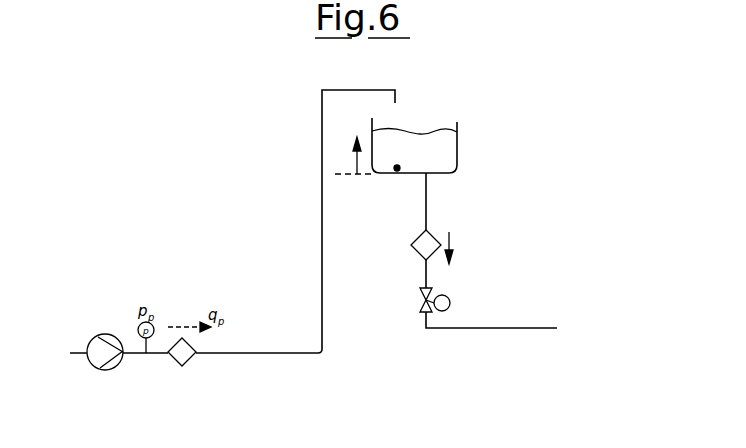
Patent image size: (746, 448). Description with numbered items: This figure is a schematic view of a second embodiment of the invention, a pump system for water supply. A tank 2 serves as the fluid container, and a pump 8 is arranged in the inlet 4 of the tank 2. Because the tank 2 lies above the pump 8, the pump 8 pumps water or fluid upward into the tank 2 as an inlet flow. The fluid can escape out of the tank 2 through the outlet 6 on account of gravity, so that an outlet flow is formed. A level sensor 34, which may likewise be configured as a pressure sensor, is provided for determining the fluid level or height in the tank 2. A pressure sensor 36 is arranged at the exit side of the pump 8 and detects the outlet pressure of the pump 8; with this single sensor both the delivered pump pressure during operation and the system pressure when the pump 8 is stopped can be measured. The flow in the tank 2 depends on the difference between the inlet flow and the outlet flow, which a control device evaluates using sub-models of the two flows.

The tank 2 is at (457, 150).
The inlet 4 is at (322, 212).
The outlet 6 is at (428, 213).
The pump 8 is at (100, 370).
The level sensor 34 is at (396, 169).
The pressure sensor 36 is at (155, 355).